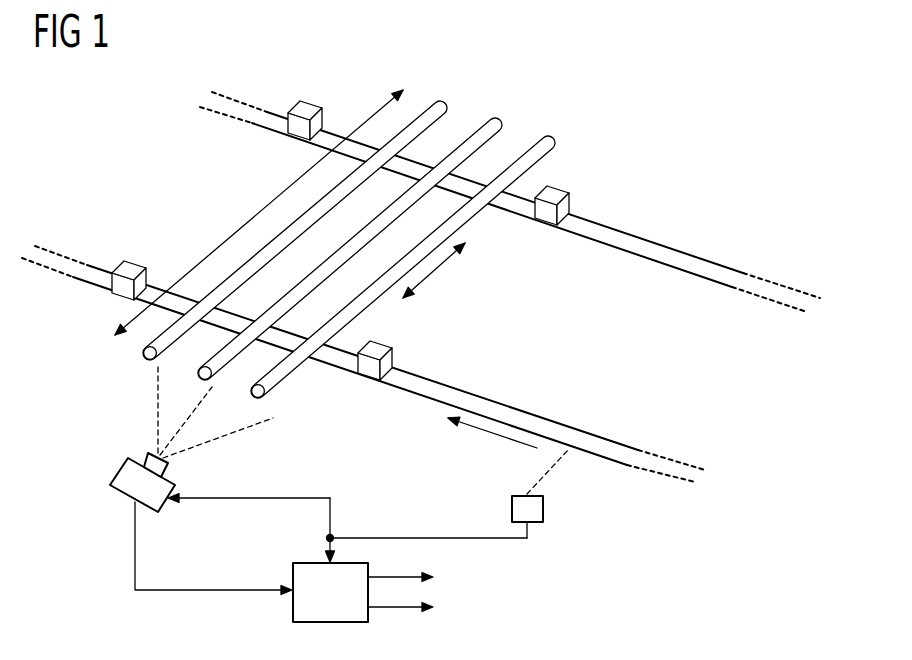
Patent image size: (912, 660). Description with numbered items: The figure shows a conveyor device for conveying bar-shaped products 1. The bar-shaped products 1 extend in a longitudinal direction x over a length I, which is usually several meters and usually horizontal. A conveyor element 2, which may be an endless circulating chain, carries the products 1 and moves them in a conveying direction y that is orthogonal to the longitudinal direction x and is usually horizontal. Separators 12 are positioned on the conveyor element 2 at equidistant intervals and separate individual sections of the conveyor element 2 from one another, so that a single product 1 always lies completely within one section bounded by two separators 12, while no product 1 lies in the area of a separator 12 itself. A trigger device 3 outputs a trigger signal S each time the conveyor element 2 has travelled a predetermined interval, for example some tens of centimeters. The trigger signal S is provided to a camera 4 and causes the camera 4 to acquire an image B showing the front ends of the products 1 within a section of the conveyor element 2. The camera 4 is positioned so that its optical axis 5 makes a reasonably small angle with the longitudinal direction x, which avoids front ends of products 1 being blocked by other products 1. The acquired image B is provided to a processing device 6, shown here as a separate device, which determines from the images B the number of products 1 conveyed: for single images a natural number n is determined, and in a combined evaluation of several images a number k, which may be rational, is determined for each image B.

The bar-shaped products 1 is at (441, 103).
The conveyor element 2 is at (668, 232).
The trigger device 3 is at (543, 508).
The camera 4 is at (118, 473).
The optical axis 5 is at (157, 386).
The processing device 6 is at (292, 568).
The separators 12 is at (310, 112).
The length I is at (233, 236).
The longitudinal direction x is at (436, 270).
The conveying direction y is at (495, 436).
The image B is at (135, 573).
The trigger signal S is at (378, 538).
The natural number n is at (410, 578).
The number k is at (409, 608).